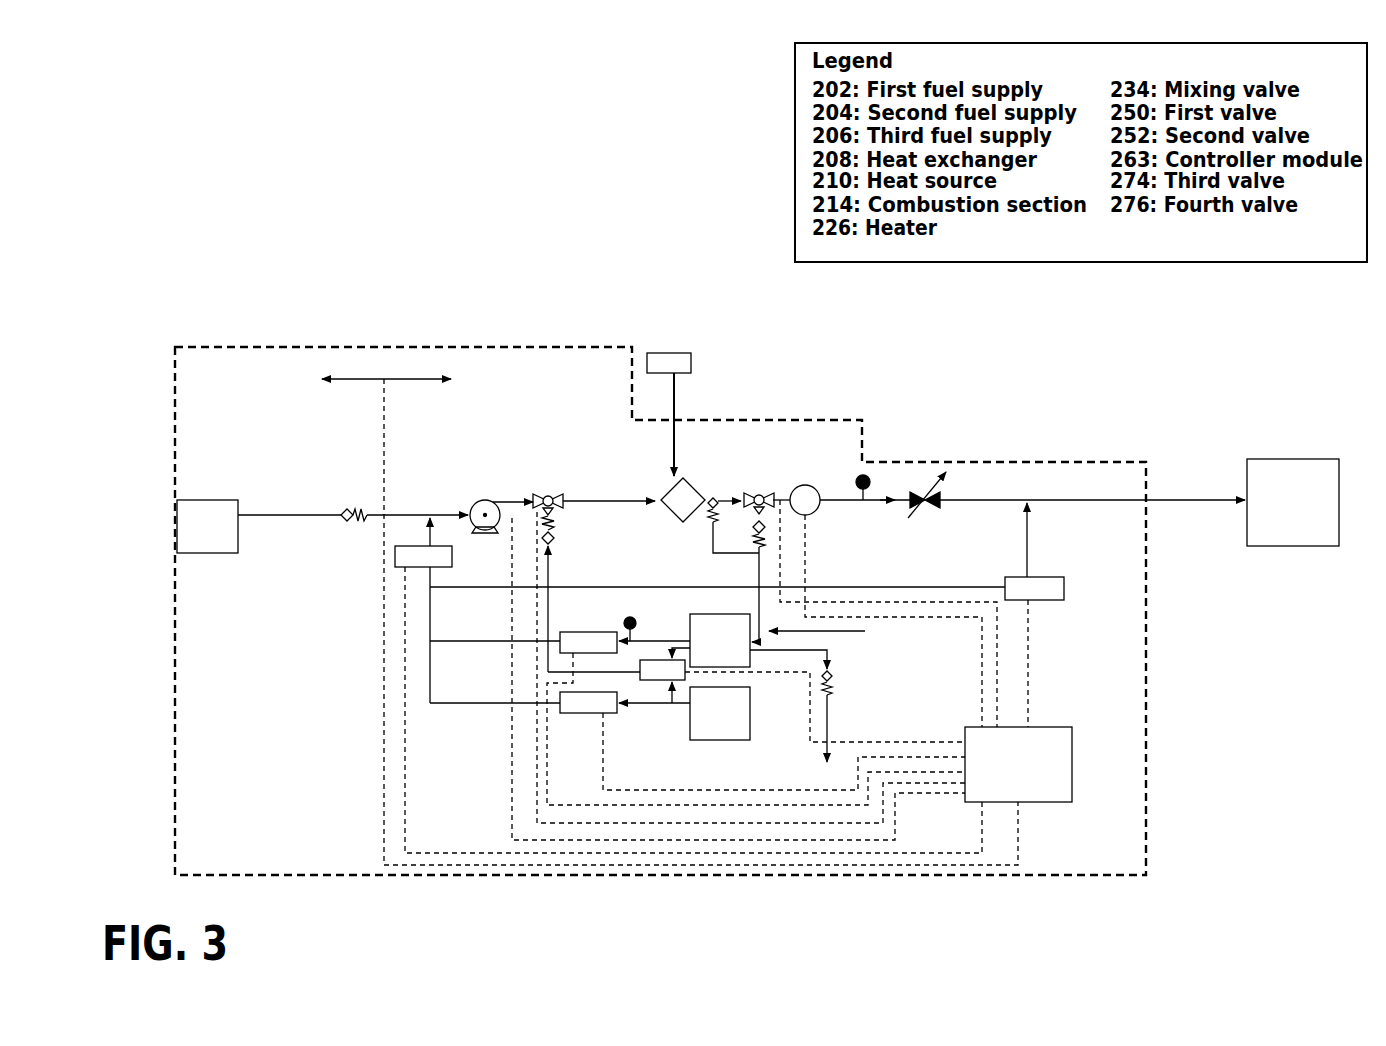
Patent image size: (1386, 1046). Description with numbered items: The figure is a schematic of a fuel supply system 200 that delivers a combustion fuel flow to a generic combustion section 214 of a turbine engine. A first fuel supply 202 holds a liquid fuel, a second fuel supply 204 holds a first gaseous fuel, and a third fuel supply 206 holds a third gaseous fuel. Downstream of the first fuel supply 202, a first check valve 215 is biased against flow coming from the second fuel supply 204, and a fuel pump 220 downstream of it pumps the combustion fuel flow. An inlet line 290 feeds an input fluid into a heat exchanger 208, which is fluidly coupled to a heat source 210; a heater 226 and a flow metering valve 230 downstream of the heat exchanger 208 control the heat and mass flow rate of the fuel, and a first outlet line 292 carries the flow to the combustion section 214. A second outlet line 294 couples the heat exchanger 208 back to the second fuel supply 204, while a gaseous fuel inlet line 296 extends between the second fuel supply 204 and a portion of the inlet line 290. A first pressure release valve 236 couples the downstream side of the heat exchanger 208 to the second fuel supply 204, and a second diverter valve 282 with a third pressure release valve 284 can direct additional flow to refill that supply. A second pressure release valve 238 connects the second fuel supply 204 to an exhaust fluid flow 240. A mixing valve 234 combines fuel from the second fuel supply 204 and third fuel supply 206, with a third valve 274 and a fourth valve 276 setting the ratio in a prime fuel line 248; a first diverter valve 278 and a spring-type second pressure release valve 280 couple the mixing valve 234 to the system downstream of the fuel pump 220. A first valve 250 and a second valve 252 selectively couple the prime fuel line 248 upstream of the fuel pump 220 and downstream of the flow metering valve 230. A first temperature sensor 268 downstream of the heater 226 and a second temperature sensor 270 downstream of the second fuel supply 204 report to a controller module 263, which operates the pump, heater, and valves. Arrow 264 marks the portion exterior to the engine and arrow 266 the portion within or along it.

The fuel supply system 200 is at (400, 348).
The first fuel supply 202 is at (203, 498).
The second fuel supply 204 is at (743, 613).
The third fuel supply 206 is at (713, 741).
The heat exchanger 208 is at (672, 518).
The heat source 210 is at (665, 350).
The combustion section 214 is at (1288, 458).
The first check valve 215 is at (346, 510).
The fuel pump 220 is at (477, 507).
The heater 226 is at (810, 515).
The flow metering valve 230 is at (937, 510).
The mixing valve 234 is at (645, 681).
The first pressure release valve 236 is at (717, 503).
The second pressure release valve 238 is at (831, 673).
The exhaust fluid flow 240 is at (829, 720).
The prime fuel line 248 is at (455, 705).
The first valve 250 is at (393, 560).
The second valve 252 is at (1032, 602).
The controller module 263 is at (1072, 773).
The arrow designating portion exterior the turbine engine 264 is at (670, 610).
The arrow designating portion within or along the turbine engine 266 is at (417, 367).
The first temperature sensor 268 is at (863, 474).
The second temperature sensor 270 is at (632, 617).
The third valve 274 is at (580, 632).
The fourth valve 276 is at (588, 713).
The first diverter valve 278 is at (543, 490).
The second pressure release valve 280 is at (553, 542).
The second diverter valve 282 is at (760, 493).
The third pressure release valve 284 is at (757, 542).
The inlet line 290 is at (568, 493).
The first outlet line 292 is at (889, 498).
The second outlet line 294 is at (836, 630).
The gaseous fuel inlet line 296 is at (435, 624).